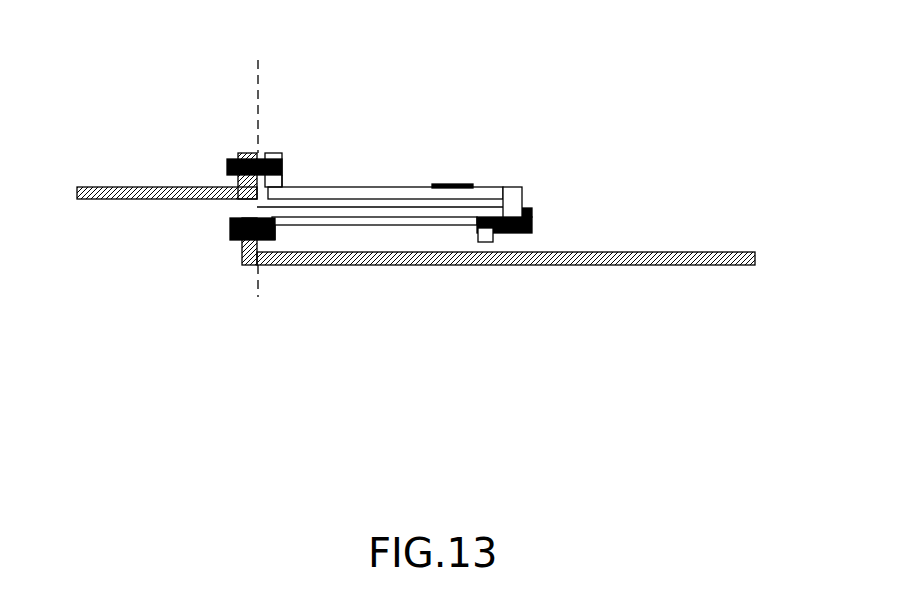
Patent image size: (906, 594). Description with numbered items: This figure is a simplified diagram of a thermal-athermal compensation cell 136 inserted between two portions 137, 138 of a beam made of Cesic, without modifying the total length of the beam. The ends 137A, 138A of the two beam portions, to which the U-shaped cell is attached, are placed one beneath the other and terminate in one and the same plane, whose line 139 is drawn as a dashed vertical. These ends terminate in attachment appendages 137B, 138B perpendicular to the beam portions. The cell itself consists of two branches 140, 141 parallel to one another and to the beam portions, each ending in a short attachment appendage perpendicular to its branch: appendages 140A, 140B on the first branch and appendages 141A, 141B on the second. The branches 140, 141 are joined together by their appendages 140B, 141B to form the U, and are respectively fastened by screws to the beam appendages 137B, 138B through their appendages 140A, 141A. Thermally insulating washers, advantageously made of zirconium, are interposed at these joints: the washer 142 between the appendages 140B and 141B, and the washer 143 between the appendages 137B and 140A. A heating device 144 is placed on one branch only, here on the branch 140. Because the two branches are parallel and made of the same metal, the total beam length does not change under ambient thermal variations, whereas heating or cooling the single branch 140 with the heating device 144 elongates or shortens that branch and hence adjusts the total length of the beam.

The compensation cell 136 is at (447, 360).
The portion of beam 137 is at (132, 200).
The end of beam portion 137A is at (212, 172).
The attachment appendage 137B is at (242, 153).
The portion of beam 138 is at (697, 251).
The end of beam portion 138A is at (308, 270).
The attachment appendage 138B is at (241, 253).
The line of plane 139 is at (258, 82).
The branch of compensation cell 140 is at (355, 193).
The attachment appendage 140A is at (283, 160).
The attachment appendage 140B is at (517, 195).
The branch of compensation cell 141 is at (395, 206).
The attachment appendage 141A is at (277, 237).
The attachment appendage 141B is at (478, 233).
The thermally insulating washer 142 is at (500, 236).
The thermally insulating washer 143 is at (262, 155).
The heating device 144 is at (462, 185).